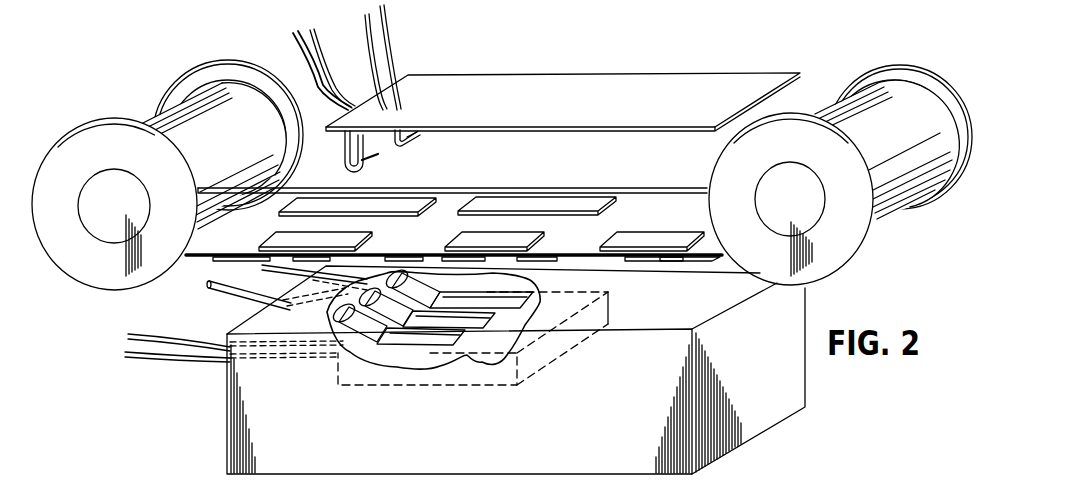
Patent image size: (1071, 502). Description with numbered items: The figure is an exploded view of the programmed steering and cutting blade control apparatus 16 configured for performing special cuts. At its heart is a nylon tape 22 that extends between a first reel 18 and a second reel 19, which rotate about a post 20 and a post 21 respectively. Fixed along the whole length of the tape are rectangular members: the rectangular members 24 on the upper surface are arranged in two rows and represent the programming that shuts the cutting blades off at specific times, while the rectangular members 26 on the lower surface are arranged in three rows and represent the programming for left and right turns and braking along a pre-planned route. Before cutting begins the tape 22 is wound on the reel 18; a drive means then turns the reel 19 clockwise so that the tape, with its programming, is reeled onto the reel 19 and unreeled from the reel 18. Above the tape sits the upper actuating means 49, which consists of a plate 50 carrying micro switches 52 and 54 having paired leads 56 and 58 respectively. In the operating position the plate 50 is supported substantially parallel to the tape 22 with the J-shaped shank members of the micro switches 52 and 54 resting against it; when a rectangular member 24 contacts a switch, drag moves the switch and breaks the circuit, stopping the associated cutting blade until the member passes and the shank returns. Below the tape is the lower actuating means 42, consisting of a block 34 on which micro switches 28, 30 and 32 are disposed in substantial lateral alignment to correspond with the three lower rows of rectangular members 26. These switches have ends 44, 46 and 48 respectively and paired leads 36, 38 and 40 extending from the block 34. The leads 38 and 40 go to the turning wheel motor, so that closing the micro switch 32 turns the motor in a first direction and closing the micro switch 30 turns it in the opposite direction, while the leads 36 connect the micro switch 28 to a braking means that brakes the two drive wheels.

The programmed steering and cutting control apparatus 16 is at (167, 155).
The reel 18 is at (840, 155).
The reel 19 is at (239, 61).
The post 20 is at (797, 210).
The post 21 is at (115, 221).
The nylon tape 22 is at (203, 255).
The rectangular members 24 is at (407, 205).
The rectangular members 26 is at (222, 260).
The micro switch 28 is at (517, 367).
The micro switch 30 is at (496, 318).
The micro switch 32 is at (421, 285).
The block 34 is at (653, 297).
The paired leads 36 is at (197, 357).
The paired leads 38 is at (208, 286).
The paired leads 40 is at (277, 267).
The lower actuating means 42 is at (230, 418).
The end 44 is at (333, 316).
The end 46 is at (358, 295).
The end 48 is at (423, 228).
The upper actuating means 49 is at (563, 98).
The plate 50 is at (667, 77).
The micro switch 52 is at (358, 145).
The micro switch 54 is at (447, 95).
The paired leads 56 is at (322, 55).
The paired leads 58 is at (386, 48).